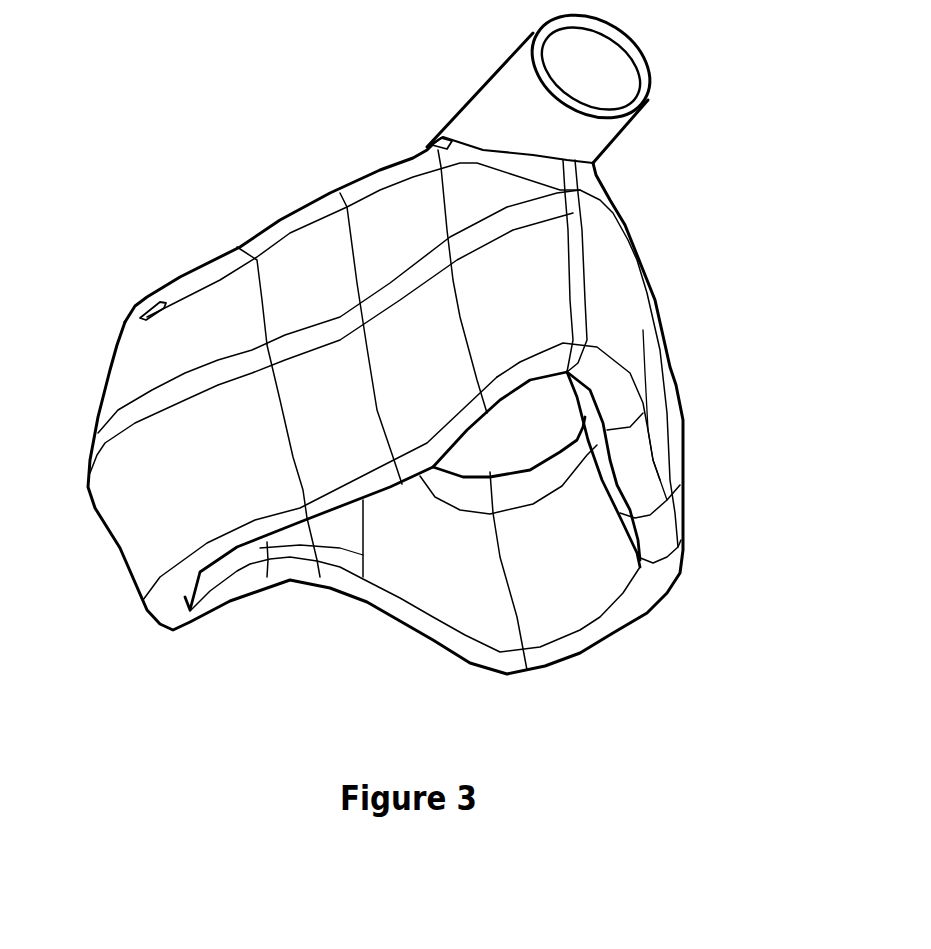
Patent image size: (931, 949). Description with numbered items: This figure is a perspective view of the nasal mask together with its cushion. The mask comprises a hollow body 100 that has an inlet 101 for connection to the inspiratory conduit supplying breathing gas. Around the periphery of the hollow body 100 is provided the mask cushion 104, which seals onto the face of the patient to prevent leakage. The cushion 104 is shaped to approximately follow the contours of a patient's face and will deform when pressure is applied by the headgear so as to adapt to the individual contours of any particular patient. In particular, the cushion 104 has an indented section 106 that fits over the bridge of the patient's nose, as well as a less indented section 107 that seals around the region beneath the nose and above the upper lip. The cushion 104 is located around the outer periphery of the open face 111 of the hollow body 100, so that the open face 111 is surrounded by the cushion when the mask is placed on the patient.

The hollow body 100 is at (162, 348).
The inlet 101 is at (640, 130).
The mask cushion 104 is at (153, 527).
The indented section 106 is at (613, 387).
The less indented section 107 is at (345, 592).
The open face 111 is at (520, 415).